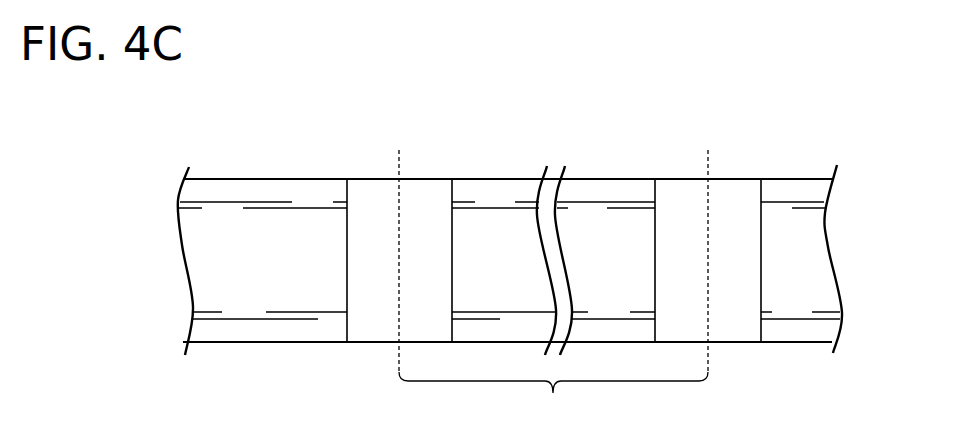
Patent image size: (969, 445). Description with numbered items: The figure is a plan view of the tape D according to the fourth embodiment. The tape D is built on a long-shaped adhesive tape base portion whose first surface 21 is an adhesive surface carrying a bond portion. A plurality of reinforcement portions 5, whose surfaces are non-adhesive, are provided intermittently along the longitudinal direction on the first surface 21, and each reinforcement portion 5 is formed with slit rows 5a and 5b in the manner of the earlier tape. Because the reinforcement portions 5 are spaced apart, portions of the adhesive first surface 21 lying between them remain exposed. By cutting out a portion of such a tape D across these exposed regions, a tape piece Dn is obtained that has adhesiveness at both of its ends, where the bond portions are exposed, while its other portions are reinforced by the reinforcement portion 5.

The reinforcement portion 5 is at (474, 229).
The slit row 5a is at (178, 202).
The slit row 5b is at (178, 208).
The first surface 21 is at (365, 190).
The tape D is at (484, 163).
The tape piece Dn is at (553, 401).